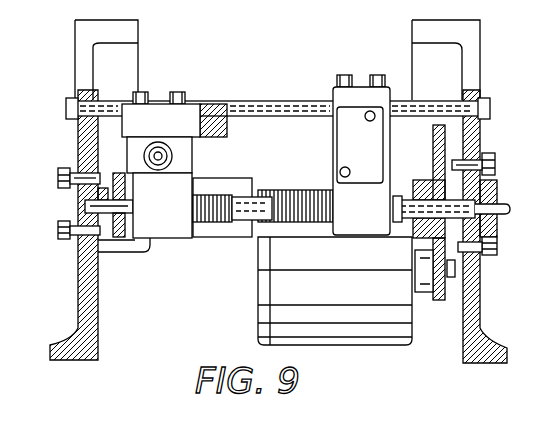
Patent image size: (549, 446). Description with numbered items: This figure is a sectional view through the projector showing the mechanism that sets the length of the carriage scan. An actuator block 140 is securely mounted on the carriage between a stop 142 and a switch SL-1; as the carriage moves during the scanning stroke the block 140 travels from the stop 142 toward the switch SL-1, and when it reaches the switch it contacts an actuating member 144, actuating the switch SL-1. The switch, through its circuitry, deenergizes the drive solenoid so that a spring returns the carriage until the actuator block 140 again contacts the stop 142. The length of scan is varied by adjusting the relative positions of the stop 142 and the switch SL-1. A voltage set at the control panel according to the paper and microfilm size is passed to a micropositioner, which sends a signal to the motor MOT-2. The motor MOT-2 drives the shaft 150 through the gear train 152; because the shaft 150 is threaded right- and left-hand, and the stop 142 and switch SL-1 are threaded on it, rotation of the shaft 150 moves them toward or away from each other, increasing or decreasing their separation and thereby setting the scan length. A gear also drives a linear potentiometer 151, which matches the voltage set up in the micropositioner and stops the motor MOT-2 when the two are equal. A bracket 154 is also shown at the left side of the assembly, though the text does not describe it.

The actuator block 140 is at (210, 110).
The stop 142 is at (155, 112).
The actuating member 144 is at (332, 155).
The switch SL-1 is at (333, 125).
The shaft 150 is at (400, 220).
The linear potentiometer 151 is at (210, 178).
The gear train 152 is at (430, 150).
The bracket 154 is at (128, 242).
The motor MOT-2 is at (258, 280).